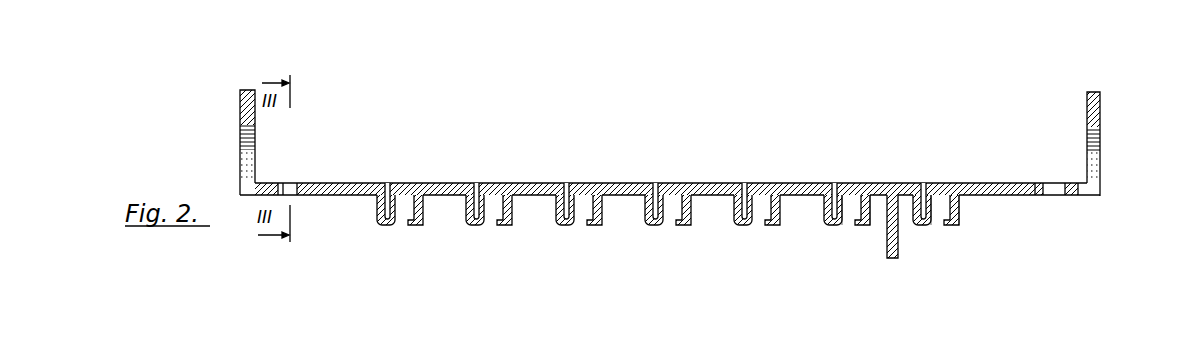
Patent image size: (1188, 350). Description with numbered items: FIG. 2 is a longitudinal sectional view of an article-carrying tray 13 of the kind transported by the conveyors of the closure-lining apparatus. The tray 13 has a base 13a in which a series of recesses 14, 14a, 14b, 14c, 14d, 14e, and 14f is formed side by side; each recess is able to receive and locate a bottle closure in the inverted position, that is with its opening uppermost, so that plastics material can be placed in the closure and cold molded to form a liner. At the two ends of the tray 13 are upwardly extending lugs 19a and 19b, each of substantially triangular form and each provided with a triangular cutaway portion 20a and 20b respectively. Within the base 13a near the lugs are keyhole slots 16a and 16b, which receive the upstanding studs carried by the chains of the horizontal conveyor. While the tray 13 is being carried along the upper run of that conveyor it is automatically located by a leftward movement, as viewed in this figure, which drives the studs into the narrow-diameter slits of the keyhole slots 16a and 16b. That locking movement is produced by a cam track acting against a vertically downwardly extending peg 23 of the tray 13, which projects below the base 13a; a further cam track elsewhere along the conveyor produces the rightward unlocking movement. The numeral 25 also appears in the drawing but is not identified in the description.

The tray 13 is at (355, 182).
The base 13a is at (527, 201).
The recess 14 is at (392, 197).
The recess 14a is at (485, 193).
The recess 14b is at (582, 192).
The recess 14c is at (677, 196).
The recess 14d is at (765, 193).
The recess 14e is at (857, 193).
The recess 14f is at (945, 193).
The keyhole slot 16a is at (293, 181).
The keyhole slot 16b is at (1043, 182).
The lug 19a is at (240, 108).
The lug 19b is at (1100, 113).
The triangular cutaway portion 20a is at (243, 158).
The triangular cutaway portion 20b is at (1098, 157).
The peg 23 is at (890, 260).
The gap 25 is at (848, 214).